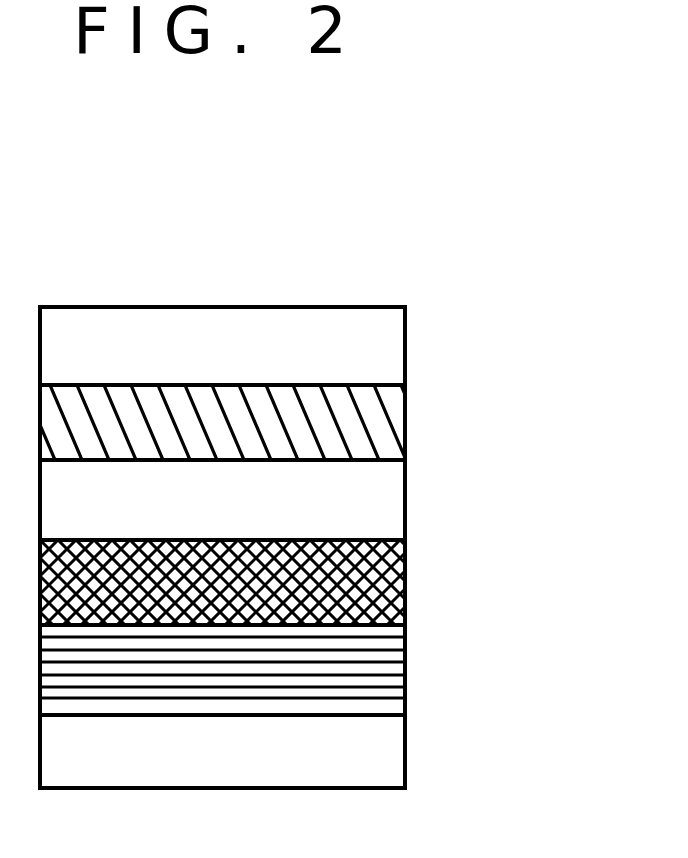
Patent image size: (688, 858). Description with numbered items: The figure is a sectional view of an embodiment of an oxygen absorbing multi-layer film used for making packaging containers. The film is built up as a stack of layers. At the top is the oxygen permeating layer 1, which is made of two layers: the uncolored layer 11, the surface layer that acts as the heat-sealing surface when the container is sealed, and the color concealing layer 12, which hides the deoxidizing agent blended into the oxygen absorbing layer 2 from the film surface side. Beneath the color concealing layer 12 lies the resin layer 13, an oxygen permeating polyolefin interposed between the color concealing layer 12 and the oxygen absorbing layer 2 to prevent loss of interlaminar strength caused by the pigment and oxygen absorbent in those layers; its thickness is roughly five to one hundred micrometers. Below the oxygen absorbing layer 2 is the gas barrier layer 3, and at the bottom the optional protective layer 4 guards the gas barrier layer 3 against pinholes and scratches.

The oxygen permeating layer 1 is at (597, 442).
The uncolored layer 11 is at (405, 350).
The color concealing layer 12 is at (405, 427).
The resin layer 13 is at (405, 505).
The oxygen absorbing layer 2 is at (405, 580).
The gas barrier layer 3 is at (405, 668).
The protective layer 4 is at (405, 755).